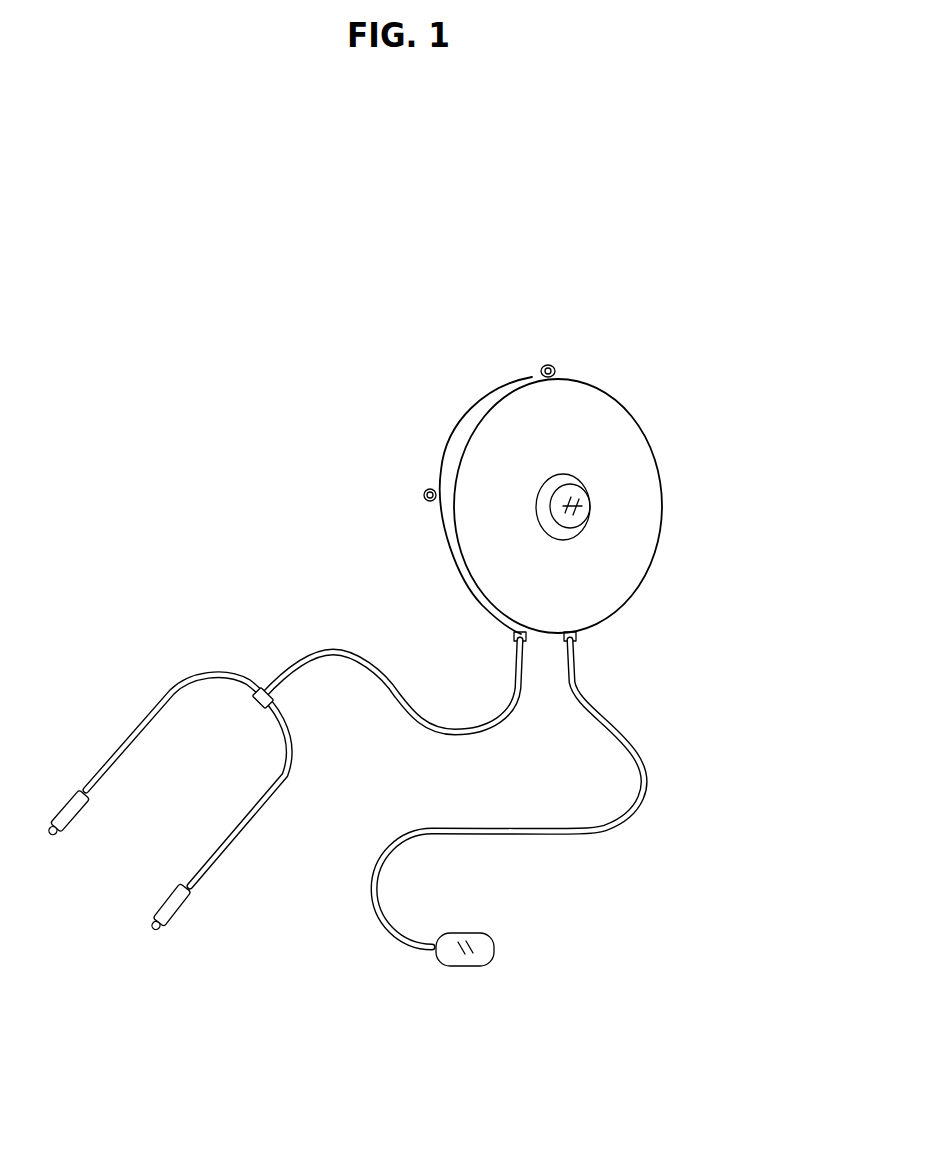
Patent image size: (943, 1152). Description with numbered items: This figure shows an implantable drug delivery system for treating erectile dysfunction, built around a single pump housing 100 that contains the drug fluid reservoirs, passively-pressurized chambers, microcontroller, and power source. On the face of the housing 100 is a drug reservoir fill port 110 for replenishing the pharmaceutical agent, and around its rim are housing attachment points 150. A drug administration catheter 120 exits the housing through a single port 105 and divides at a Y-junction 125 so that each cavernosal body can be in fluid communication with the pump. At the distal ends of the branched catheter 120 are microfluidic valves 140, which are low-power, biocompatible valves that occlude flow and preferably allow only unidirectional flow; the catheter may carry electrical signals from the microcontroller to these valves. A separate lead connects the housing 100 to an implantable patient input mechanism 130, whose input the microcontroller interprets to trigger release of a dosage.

The pump housing 100 is at (627, 544).
The single port 105 is at (524, 641).
The drug reservoir fill port 110 is at (577, 502).
The drug administration catheter 120 is at (310, 655).
The Y-junction 125 is at (259, 702).
The implantable patient input mechanism 130 is at (640, 790).
The microfluidic valves 140 is at (162, 907).
The housing attachment points 150 is at (557, 369).